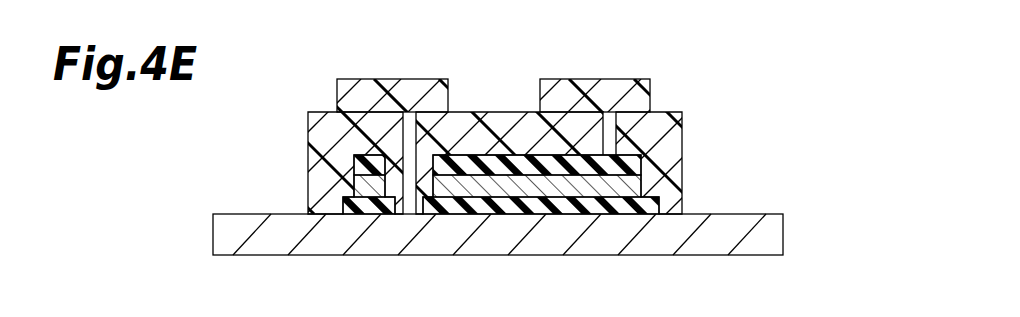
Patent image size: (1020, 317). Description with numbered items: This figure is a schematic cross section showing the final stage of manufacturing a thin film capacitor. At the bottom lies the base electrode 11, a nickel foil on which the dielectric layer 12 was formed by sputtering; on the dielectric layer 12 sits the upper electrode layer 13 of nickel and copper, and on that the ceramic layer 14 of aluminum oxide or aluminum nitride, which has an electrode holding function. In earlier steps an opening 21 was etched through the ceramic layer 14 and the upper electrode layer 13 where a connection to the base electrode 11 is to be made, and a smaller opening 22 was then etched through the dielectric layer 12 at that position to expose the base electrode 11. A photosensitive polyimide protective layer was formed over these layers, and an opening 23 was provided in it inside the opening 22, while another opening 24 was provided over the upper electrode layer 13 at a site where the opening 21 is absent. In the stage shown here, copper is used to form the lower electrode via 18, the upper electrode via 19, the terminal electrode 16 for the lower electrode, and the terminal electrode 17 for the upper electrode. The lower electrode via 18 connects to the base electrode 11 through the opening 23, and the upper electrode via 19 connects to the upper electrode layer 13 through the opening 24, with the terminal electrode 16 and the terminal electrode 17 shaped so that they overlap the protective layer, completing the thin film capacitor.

The base electrode 11 is at (763, 238).
The dielectric layer 12 is at (658, 208).
The upper electrode layer 13 is at (647, 188).
The ceramic layer 14 is at (647, 160).
The terminal electrode for lower electrode 16 is at (387, 95).
The terminal electrode for upper electrode 17 is at (600, 95).
The lower electrode via 18 is at (408, 143).
The upper electrode via 19 is at (610, 130).
The opening 21 is at (425, 156).
The opening 22 is at (410, 214).
The opening 23 is at (410, 113).
The opening 24 is at (609, 113).